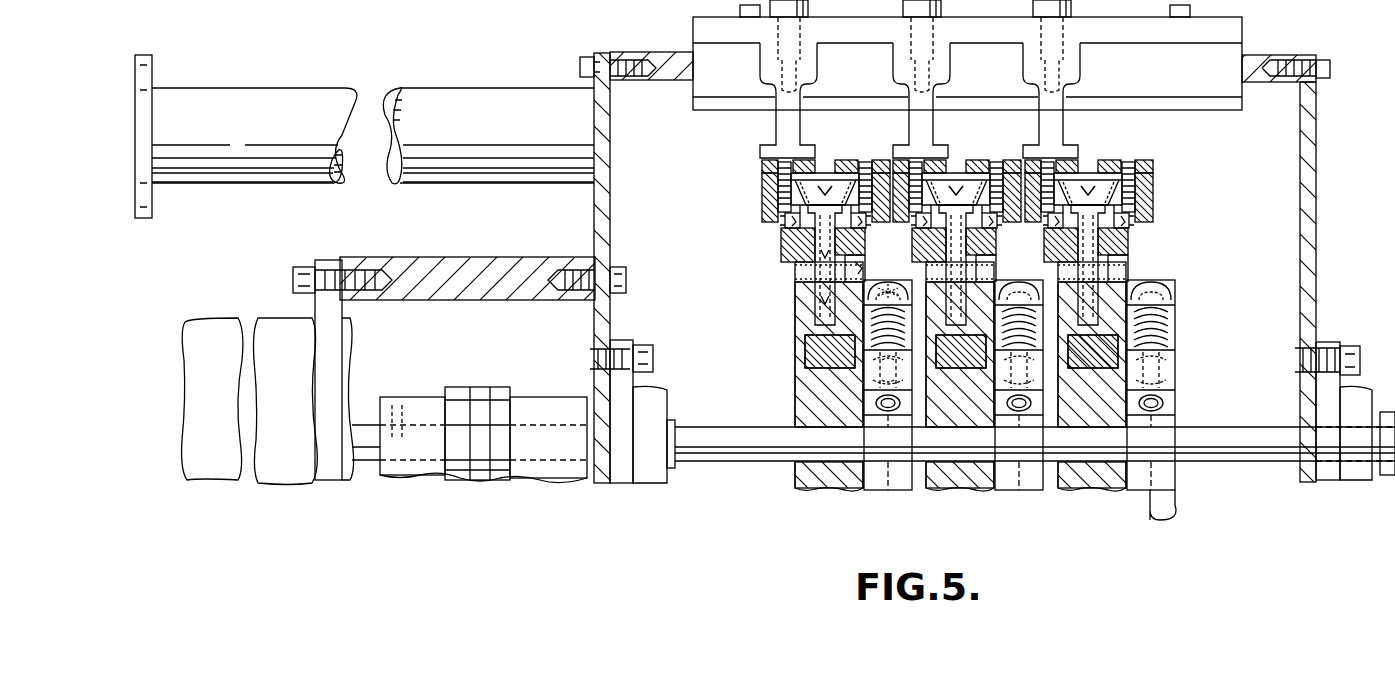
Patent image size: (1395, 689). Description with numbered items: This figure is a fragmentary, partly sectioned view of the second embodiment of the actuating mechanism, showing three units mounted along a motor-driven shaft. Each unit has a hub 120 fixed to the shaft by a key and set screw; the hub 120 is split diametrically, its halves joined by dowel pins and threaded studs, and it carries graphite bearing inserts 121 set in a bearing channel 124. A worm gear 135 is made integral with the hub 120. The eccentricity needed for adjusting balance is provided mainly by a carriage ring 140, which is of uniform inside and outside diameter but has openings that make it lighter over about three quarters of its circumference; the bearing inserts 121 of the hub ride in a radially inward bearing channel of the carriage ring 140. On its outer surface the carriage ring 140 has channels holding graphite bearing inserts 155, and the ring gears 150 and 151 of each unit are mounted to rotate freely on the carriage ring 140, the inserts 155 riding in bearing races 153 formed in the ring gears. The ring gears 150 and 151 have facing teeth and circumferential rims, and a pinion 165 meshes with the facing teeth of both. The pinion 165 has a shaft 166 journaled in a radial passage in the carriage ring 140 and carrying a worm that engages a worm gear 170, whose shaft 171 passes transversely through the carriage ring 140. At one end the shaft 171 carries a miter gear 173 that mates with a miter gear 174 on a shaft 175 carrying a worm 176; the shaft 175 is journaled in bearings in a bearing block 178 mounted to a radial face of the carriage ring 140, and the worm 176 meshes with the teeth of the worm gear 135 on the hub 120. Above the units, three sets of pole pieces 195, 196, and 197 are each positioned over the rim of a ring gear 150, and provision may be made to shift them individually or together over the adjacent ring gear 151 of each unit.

The hub 120 is at (812, 482).
The graphite bearing inserts 121 is at (810, 350).
The bearing channel 124 is at (970, 368).
The worm gear 135 is at (1168, 490).
The carriage ring 140 is at (802, 280).
The ring gear 150 is at (770, 180).
The ring gear 151 is at (878, 195).
The bearing races 153 is at (782, 222).
The graphite bearing inserts 155 is at (787, 228).
The pinion 165 is at (820, 185).
The shaft 166 is at (808, 240).
The worm gear 170 is at (800, 290).
The shaft 171 is at (820, 258).
The miter gear 173 is at (995, 270).
The miter gear 174 is at (875, 280).
The shaft 175 is at (876, 403).
The worm 176 is at (1168, 338).
The bearing block 178 is at (1160, 405).
The pole pieces 195 is at (790, 120).
The pole pieces 196 is at (918, 130).
The pole pieces 197 is at (1047, 132).